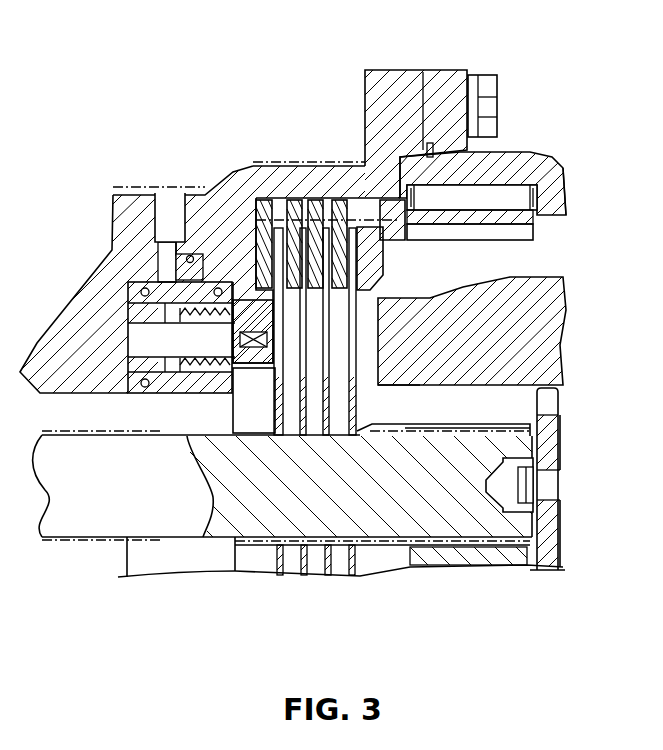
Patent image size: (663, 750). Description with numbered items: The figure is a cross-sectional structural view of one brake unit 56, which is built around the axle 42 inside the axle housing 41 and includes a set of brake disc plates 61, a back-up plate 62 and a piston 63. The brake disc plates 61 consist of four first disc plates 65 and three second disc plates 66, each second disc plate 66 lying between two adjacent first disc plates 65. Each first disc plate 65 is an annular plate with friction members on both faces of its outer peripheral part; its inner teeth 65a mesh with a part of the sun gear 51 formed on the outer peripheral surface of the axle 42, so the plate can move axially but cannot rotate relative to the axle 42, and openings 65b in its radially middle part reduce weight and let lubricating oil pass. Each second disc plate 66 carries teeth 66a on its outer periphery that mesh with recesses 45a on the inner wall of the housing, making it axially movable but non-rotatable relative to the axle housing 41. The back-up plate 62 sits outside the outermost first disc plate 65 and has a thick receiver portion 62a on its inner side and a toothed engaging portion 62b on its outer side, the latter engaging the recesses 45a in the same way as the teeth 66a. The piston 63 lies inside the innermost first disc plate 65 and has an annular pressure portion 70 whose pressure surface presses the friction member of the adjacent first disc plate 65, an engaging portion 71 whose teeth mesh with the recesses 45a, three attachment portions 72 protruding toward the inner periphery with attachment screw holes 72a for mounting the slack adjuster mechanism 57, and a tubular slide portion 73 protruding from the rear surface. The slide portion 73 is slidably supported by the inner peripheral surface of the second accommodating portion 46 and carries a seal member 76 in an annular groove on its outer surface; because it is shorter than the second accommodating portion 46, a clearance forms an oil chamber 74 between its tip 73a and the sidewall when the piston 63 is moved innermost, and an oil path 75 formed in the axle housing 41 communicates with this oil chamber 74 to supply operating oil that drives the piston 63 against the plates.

The axle housing 41 is at (398, 78).
The axle 42 is at (100, 525).
The recesses 45a is at (375, 207).
The second accommodating portion 46 is at (150, 310).
The sun gear 51 is at (495, 424).
The brake unit 56 is at (405, 267).
The slack adjuster mechanism 57 is at (140, 402).
The brake disc plates 61 is at (278, 210).
The back-up plate 62 is at (390, 317).
The receiver portion 62a is at (381, 276).
The engaging portion 62b is at (432, 206).
The piston 63 is at (224, 238).
The first disc plates 65 is at (381, 243).
The inner teeth 65a is at (360, 428).
The openings 65b is at (363, 368).
The second disc plates 66 is at (405, 234).
The teeth 66a is at (342, 196).
The pressure portion 70 is at (163, 378).
The engaging portion 71 is at (248, 188).
The attachment portions 72 is at (259, 367).
The attachment screw hole 72a is at (224, 378).
The slide portion 73 is at (212, 242).
The tip 73a is at (173, 272).
The oil chamber 74 is at (163, 244).
The oil path 75 is at (160, 196).
The seal member 76 is at (175, 272).